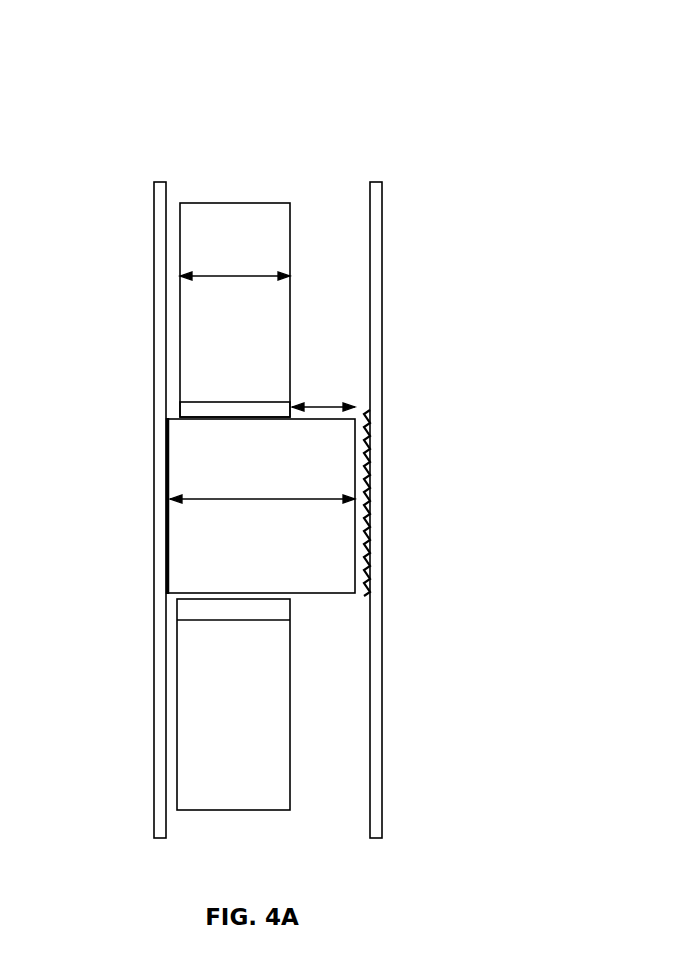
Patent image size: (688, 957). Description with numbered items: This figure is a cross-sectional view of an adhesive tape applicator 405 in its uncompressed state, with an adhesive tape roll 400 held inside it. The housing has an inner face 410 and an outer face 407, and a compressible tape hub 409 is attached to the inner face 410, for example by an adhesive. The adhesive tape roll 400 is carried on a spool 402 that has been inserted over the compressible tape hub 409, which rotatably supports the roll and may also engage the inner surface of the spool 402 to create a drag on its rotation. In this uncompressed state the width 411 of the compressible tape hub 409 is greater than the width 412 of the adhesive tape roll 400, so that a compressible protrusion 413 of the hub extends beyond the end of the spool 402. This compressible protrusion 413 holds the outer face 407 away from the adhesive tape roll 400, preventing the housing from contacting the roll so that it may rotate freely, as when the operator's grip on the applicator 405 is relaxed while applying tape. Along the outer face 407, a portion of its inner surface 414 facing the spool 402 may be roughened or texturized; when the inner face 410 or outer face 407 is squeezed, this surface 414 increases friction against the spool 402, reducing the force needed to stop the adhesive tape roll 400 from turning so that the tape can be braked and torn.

The adhesive tape applicator 405 is at (264, 65).
The adhesive tape roll 400 is at (258, 265).
The spool 402 is at (262, 410).
The width of the adhesive tape roll 412 is at (212, 260).
The compressible protrusion 413 is at (320, 405).
The inner face of the housing 410 is at (155, 480).
The compressible tape hub 409 is at (197, 518).
The width of the compressible tape hub 411 is at (248, 484).
The inner surface of the outer face 414 is at (368, 540).
The outer face of the housing 407 is at (382, 717).